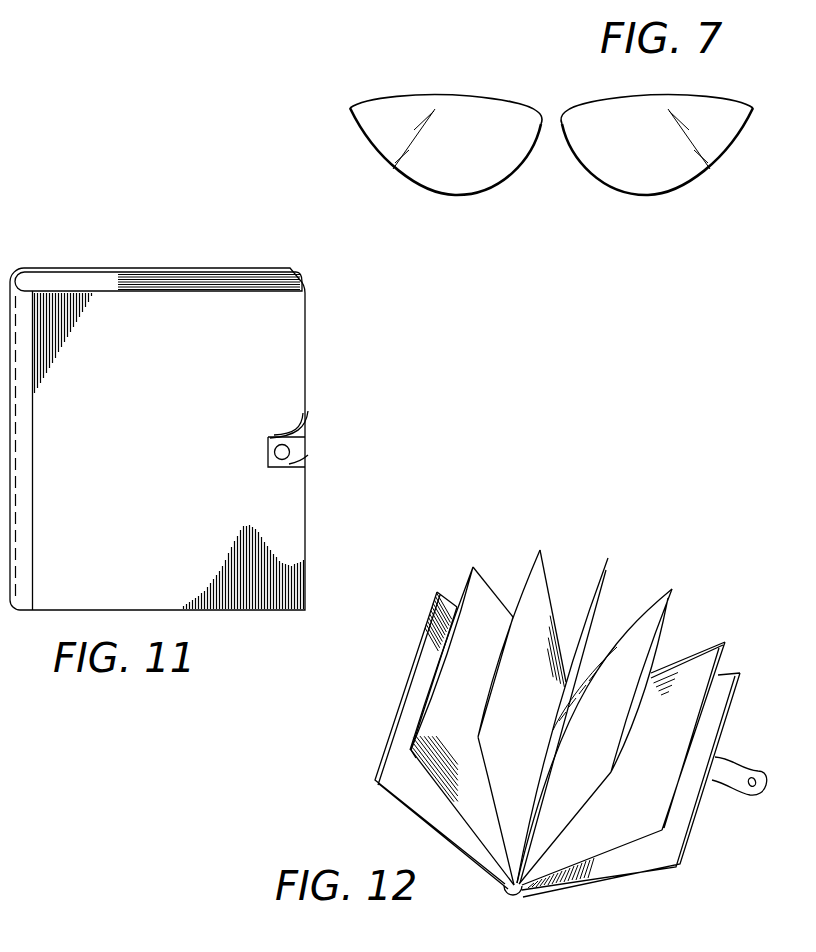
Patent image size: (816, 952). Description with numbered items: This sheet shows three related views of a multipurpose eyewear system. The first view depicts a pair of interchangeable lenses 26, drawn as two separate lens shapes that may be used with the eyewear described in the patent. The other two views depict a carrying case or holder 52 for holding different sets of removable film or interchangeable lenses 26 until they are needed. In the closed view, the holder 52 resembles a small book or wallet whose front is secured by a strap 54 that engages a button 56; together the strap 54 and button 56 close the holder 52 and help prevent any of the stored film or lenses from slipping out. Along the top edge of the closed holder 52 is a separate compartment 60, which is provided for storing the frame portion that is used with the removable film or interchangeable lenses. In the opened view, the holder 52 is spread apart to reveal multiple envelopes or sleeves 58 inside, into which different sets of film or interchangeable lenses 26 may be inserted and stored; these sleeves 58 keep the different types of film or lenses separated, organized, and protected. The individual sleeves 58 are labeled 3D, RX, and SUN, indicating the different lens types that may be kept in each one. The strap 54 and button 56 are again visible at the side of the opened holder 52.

In FIG. 7, the interchangeable lenses 26 is at (587, 106).
In FIG. 11, the holder 52 is at (232, 242).
In FIG. 12, the holder 52 is at (554, 694).
In FIG. 11, the strap 54 is at (303, 445).
In FIG. 12, the strap 54 is at (737, 772).
In FIG. 11, the button 56 is at (285, 458).
In FIG. 12, the button 56 is at (763, 795).
In FIG. 12, the envelopes or sleeves 58 is at (498, 770).
In FIG. 11, the separate compartment 60 is at (67, 282).
In FIG. 12, the 3D lens page 3D is at (527, 582).
In FIG. 12, the prescription lens page RX is at (600, 590).
In FIG. 12, the sun lens page SUN is at (632, 733).